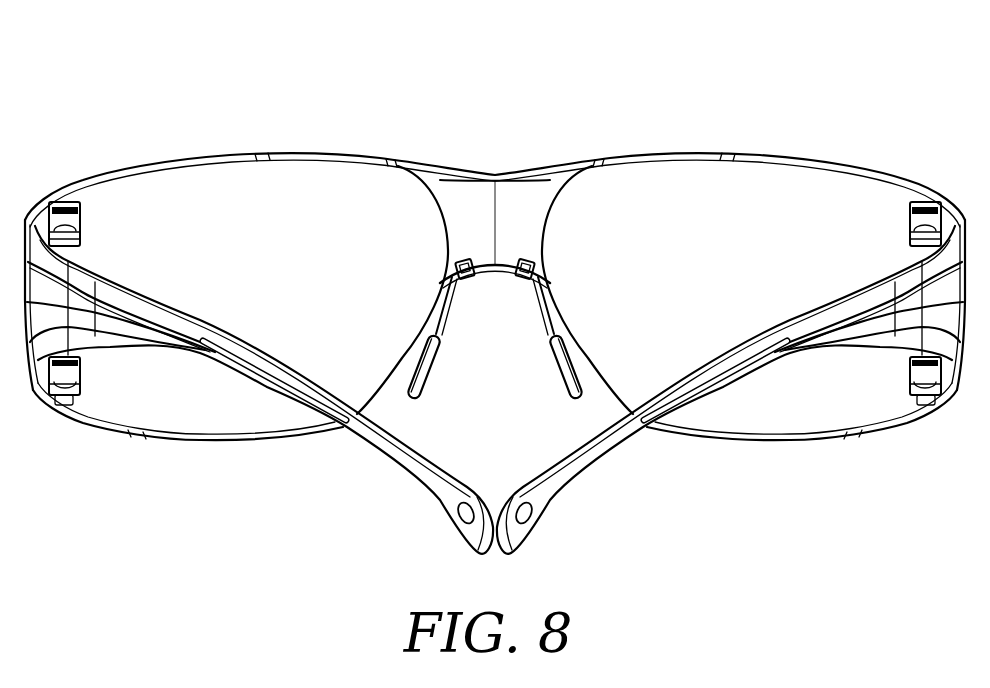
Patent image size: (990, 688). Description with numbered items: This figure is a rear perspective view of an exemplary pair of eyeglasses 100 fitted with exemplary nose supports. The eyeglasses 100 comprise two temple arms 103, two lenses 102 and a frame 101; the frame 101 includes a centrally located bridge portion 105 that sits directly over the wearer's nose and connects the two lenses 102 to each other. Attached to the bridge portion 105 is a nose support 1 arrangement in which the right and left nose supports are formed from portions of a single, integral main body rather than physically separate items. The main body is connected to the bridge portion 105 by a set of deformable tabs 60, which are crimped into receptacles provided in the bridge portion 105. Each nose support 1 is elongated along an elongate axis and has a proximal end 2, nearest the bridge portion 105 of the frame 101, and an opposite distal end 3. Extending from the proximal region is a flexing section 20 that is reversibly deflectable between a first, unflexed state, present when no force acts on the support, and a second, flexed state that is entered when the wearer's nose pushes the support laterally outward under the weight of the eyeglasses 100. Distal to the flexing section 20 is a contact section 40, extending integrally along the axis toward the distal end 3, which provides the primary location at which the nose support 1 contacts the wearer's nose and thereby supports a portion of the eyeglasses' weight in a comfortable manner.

The eyeglasses 100 is at (162, 88).
The frame 101 is at (715, 158).
The lens 102 is at (286, 268).
The temple arm 103 is at (553, 487).
The bridge portion 105 is at (463, 203).
The nose support 1 is at (404, 288).
The proximal end 2 is at (489, 290).
The flexing section 20 is at (522, 331).
The contact section 40 is at (449, 389).
The distal end 3 is at (560, 412).
The deformable tabs 60 is at (463, 261).